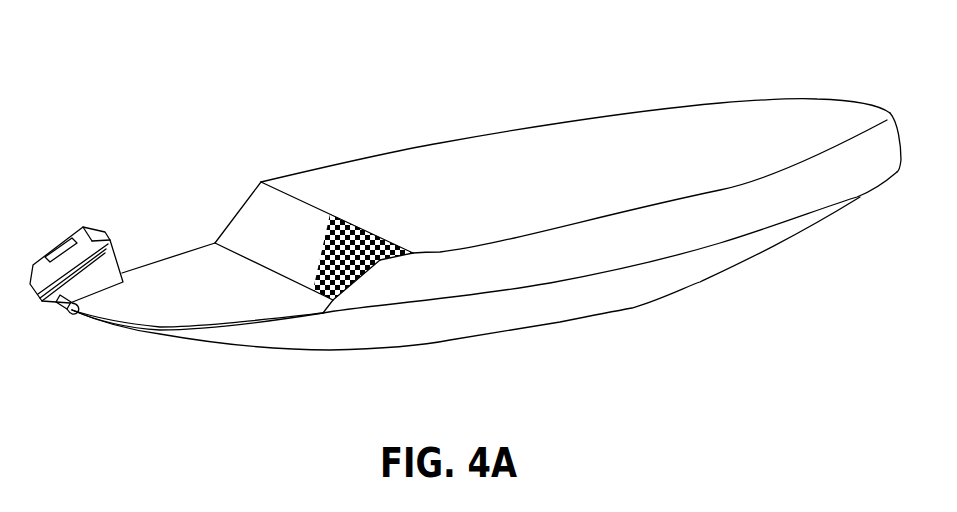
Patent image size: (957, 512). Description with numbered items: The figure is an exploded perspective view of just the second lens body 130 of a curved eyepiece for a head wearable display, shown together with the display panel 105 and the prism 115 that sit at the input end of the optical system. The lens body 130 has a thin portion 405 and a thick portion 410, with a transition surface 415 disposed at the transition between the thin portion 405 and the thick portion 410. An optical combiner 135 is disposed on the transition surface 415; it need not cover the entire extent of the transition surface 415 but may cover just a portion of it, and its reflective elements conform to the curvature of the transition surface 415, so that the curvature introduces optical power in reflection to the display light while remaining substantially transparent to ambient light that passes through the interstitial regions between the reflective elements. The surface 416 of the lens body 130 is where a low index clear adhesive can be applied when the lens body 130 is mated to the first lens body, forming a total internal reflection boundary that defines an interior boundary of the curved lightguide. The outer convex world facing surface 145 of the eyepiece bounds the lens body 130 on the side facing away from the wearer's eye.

The second lens body 130 is at (240, 89).
The display panel 105 is at (90, 224).
The prism 115 is at (78, 296).
The optical combiner 135 is at (330, 213).
The transition surface 415 is at (289, 243).
The surface 416 is at (222, 300).
The thick portion 410 is at (659, 243).
The thin portion 405 is at (167, 325).
The convex world facing surface 145 is at (632, 318).